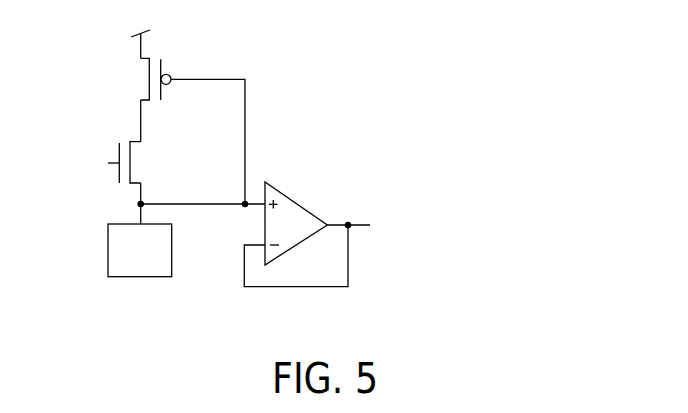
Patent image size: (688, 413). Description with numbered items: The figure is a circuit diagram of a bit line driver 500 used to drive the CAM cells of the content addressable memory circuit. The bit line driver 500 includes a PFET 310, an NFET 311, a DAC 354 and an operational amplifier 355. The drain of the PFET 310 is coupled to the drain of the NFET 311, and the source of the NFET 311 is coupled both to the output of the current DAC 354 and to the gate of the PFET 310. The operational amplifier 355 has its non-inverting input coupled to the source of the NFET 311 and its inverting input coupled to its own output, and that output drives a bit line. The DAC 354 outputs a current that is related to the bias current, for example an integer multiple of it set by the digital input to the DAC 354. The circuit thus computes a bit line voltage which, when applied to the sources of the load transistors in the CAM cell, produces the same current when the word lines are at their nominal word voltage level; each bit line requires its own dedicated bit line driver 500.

The bit line driver 500 is at (358, 52).
The PFET 310 is at (138, 79).
The NFET 311 is at (142, 163).
The DAC 354 is at (140, 250).
The operational amplifier 355 is at (296, 192).